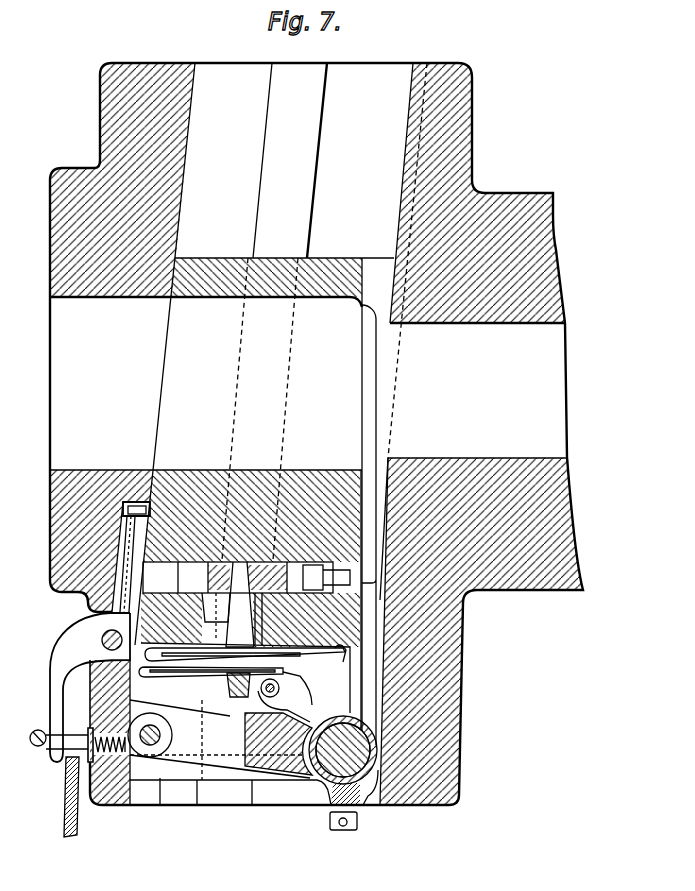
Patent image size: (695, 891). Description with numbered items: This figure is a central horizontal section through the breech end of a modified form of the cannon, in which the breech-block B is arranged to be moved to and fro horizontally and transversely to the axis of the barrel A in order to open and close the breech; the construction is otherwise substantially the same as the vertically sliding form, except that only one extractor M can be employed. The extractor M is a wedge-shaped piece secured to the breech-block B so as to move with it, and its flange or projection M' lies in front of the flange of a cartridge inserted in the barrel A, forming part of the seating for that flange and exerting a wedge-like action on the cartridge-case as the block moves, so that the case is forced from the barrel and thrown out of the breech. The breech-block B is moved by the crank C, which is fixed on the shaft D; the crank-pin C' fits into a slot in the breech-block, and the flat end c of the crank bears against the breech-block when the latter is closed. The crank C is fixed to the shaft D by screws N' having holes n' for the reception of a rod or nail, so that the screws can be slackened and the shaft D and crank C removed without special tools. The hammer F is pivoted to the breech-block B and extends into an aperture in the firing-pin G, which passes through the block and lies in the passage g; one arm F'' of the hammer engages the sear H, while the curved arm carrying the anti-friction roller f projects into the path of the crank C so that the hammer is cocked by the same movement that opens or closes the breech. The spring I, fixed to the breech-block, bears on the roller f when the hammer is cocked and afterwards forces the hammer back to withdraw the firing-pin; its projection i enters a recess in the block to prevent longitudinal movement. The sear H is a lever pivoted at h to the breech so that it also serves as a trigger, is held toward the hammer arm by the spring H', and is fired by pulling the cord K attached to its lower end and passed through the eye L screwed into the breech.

The barrel A is at (316, 434).
The breech-block B is at (338, 260).
The extractor M is at (353, 501).
The flange or projection M' is at (402, 484).
The spring H' is at (146, 511).
The sear H is at (136, 564).
The aperture or passage g is at (238, 578).
The firing-pin G is at (326, 577).
The hammer F is at (232, 604).
The pivot h is at (90, 687).
The spring I is at (245, 658).
The arm of the hammer F'' is at (206, 691).
The anti-friction roller f is at (280, 684).
The projection i is at (340, 662).
The eye L is at (88, 737).
The cord K is at (65, 787).
The crank-pin C' is at (150, 735).
The crank C is at (265, 744).
The flat end of the crank c is at (220, 766).
The shaft D is at (343, 760).
The screws N' is at (358, 821).
The holes n' is at (346, 836).